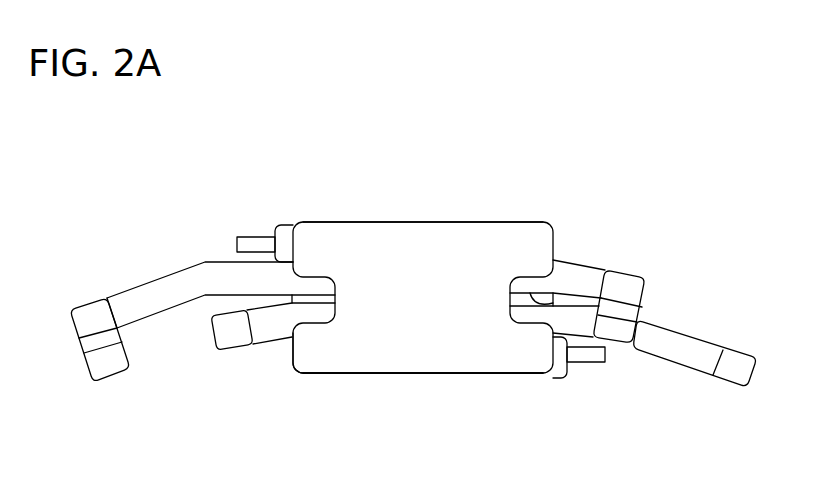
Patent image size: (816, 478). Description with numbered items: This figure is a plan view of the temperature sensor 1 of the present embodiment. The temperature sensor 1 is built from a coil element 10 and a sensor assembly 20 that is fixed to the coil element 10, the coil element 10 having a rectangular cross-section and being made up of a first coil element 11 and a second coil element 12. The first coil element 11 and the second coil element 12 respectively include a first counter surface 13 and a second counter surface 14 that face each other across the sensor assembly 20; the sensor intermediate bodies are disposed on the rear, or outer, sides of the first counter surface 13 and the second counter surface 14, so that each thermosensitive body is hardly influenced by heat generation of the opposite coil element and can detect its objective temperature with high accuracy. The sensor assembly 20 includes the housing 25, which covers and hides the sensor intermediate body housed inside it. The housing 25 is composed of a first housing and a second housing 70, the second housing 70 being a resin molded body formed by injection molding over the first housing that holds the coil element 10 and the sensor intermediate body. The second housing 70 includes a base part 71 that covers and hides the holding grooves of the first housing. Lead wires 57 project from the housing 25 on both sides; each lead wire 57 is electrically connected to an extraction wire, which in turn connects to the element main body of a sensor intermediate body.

The temperature sensor 1 is at (549, 153).
The coil element 10 is at (684, 187).
The first coil element 11 is at (665, 322).
The second coil element 12 is at (628, 268).
The first counter surface 13 is at (563, 300).
The second counter surface 14 is at (550, 300).
The sensor assembly 20 is at (409, 214).
The housing 25 is at (443, 222).
The lead wire 57 is at (259, 236).
The second housing 70 is at (448, 373).
The base part 71 is at (378, 345).